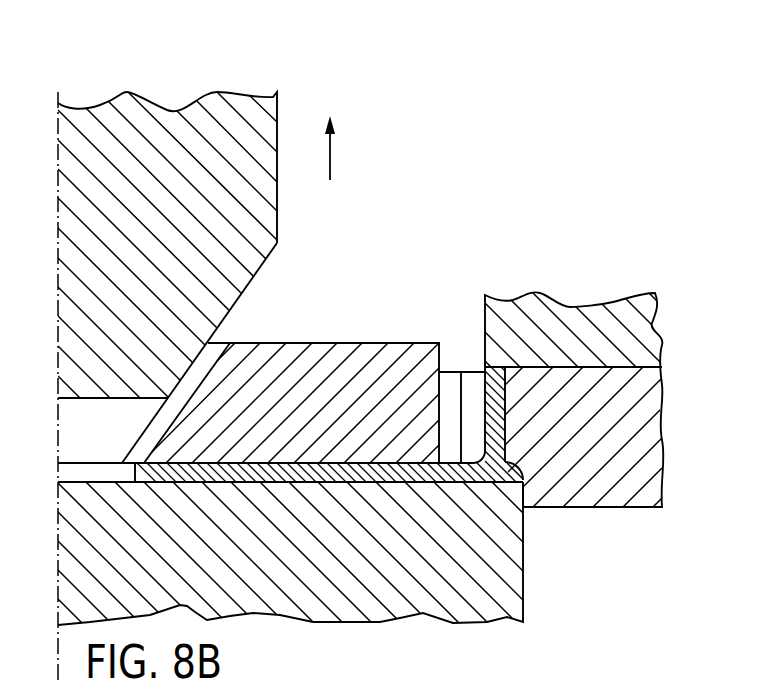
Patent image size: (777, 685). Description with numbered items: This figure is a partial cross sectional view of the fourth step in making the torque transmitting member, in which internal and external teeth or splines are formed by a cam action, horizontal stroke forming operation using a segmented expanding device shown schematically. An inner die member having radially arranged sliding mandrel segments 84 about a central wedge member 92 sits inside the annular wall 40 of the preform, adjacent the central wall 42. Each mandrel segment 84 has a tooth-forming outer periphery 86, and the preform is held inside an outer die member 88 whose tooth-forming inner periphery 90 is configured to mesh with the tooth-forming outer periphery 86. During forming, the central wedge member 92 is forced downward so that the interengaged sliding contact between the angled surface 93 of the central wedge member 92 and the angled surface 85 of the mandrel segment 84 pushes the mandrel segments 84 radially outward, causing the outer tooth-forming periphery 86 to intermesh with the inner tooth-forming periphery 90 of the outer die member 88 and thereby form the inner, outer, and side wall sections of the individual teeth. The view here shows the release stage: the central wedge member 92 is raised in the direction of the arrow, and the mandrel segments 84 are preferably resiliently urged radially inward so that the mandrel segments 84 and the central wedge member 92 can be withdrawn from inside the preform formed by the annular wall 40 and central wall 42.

The central wedge member 92 is at (258, 97).
The angled surface of central wedge member 93 is at (240, 298).
The angled surface of mandrel segment 85 is at (140, 435).
The sliding mandrel segment 84 is at (370, 342).
The tooth-forming outer periphery 86 is at (450, 372).
The annular wall 40 is at (508, 447).
The tooth-forming inner periphery 90 is at (517, 474).
The outer die member 88 is at (643, 508).
The central wall 42 is at (293, 485).